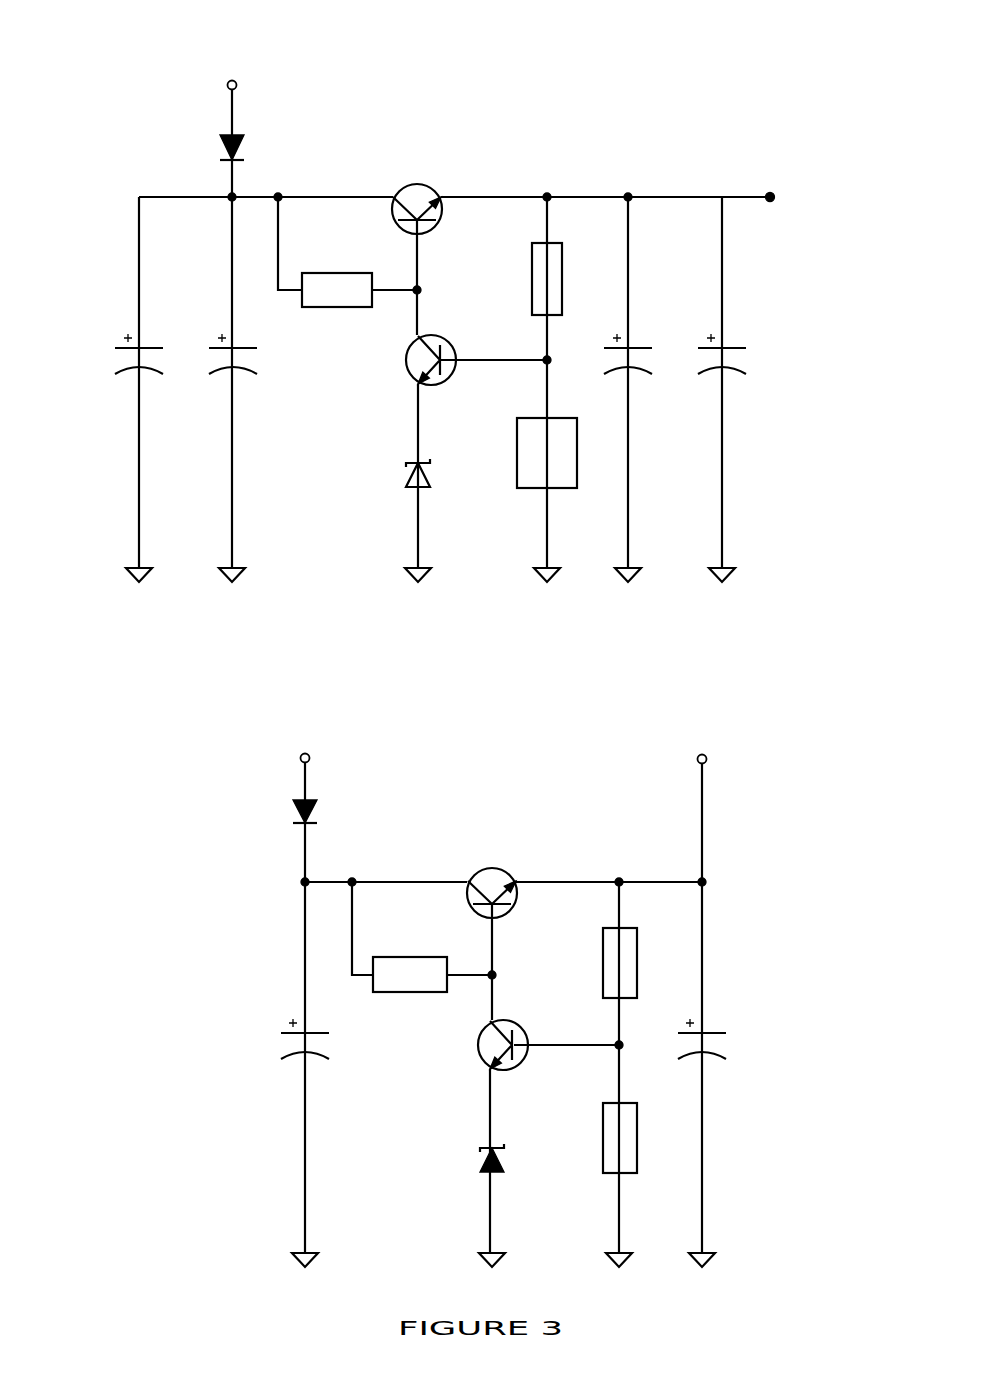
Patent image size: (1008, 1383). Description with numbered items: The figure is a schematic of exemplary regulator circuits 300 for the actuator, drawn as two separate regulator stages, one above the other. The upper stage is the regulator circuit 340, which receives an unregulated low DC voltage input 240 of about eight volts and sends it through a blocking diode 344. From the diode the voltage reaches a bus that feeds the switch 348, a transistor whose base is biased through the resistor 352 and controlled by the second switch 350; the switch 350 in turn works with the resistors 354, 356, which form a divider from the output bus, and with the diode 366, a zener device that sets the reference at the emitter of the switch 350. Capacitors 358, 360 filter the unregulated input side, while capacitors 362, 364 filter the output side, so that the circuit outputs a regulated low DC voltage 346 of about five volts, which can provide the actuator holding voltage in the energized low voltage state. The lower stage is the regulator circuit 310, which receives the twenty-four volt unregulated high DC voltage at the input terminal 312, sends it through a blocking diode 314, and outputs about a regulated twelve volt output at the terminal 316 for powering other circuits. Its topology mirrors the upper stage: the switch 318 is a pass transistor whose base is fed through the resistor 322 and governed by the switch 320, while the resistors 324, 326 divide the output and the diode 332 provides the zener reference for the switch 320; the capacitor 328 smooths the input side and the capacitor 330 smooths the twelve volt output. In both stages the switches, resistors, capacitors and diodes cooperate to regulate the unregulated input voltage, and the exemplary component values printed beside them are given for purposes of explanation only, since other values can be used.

The regulator circuits 300 is at (568, 70).
The regulator circuit 340 is at (378, 125).
The regulator circuit 310 is at (520, 733).
The unregulated low DC voltage input 240 is at (237, 85).
The blocking diode 344 is at (246, 134).
The switch 348 is at (414, 186).
The regulated low DC voltage 346 is at (793, 168).
The resistor 352 is at (322, 273).
The switch 350 is at (407, 368).
The diode 366 is at (413, 490).
The resistor 354 is at (562, 265).
The resistor 356 is at (572, 440).
The capacitor 358 is at (117, 347).
The capacitor 360 is at (237, 347).
The capacitor 362 is at (634, 347).
The capacitor 364 is at (726, 347).
The input terminal 312 is at (310, 758).
The blocking diode 314 is at (292, 806).
The terminal 316 is at (707, 758).
The switch 318 is at (488, 870).
The resistor 322 is at (388, 957).
The switch 320 is at (479, 1040).
The diode 332 is at (498, 1178).
The resistor 324 is at (640, 945).
The resistor 326 is at (628, 1102).
The capacitor 328 is at (301, 1032).
The capacitor 330 is at (706, 1030).